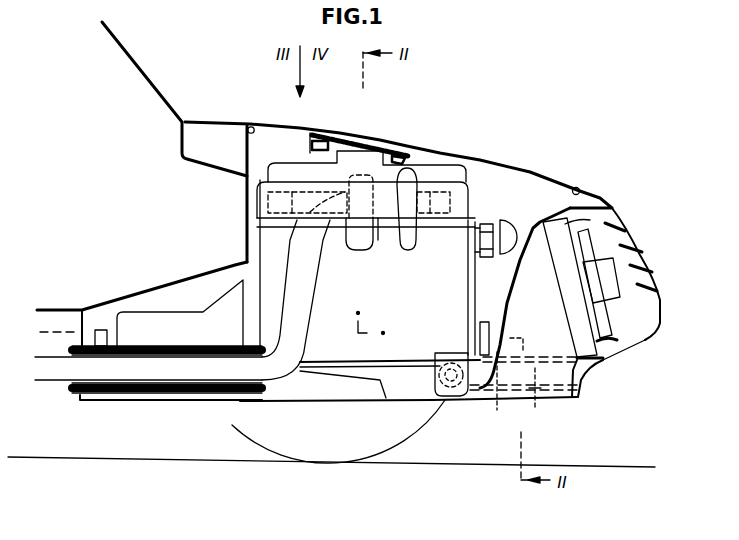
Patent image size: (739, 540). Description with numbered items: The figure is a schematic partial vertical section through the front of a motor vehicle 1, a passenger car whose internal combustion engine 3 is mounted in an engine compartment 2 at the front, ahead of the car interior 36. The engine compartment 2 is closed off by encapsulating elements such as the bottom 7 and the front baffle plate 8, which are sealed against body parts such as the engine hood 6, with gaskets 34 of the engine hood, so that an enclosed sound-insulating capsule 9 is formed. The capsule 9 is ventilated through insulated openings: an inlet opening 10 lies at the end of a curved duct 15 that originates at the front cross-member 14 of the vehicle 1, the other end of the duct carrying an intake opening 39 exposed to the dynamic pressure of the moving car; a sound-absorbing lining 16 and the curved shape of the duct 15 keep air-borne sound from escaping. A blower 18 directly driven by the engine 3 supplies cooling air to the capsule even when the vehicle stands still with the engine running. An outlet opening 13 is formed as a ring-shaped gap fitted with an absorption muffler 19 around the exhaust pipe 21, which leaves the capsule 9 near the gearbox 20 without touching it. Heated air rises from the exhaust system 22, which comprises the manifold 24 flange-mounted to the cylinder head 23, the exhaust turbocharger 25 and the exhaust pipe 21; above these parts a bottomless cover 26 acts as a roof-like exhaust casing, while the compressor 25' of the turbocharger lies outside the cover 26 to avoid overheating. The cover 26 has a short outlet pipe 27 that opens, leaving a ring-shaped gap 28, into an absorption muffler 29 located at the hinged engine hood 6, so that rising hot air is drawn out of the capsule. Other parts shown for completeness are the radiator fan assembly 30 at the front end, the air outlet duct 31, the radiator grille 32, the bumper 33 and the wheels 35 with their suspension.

The motor vehicle 1 is at (148, 70).
The engine compartment 2 is at (498, 195).
The internal combustion engine 3 is at (393, 300).
The engine hood 6 is at (477, 158).
The bottom 7 is at (353, 403).
The front baffle plate 8 is at (515, 302).
The sound-insulating capsule 9 is at (537, 167).
The inlet opening 10 is at (452, 399).
The outlet opening 13 is at (72, 384).
The front cross-member 14 is at (584, 389).
The curved duct 15 is at (523, 398).
The sound-absorbing lining 16 is at (493, 375).
The blower 18 is at (497, 262).
The absorption muffler 19 is at (134, 394).
The gearbox 20 is at (176, 332).
The exhaust pipe 21 is at (272, 372).
The exhaust system 22 is at (387, 222).
The cylinder head 23 is at (447, 170).
The manifold 24 is at (282, 222).
The exhaust turbocharger 25 is at (354, 233).
The compressor 25' is at (410, 221).
The cover 26 is at (282, 180).
The outlet pipe 27 is at (370, 160).
The ring-shaped gap 28 is at (330, 150).
The absorption muffler 29 is at (355, 137).
The radiator fan assembly 30 is at (611, 311).
The air outlet duct 31 is at (554, 362).
The radiator grille 32 is at (643, 259).
The bumper 33 is at (662, 312).
The gaskets 34 is at (250, 126).
The wheels 35 is at (251, 428).
The car interior 36 is at (102, 208).
The intake opening 39 is at (594, 374).